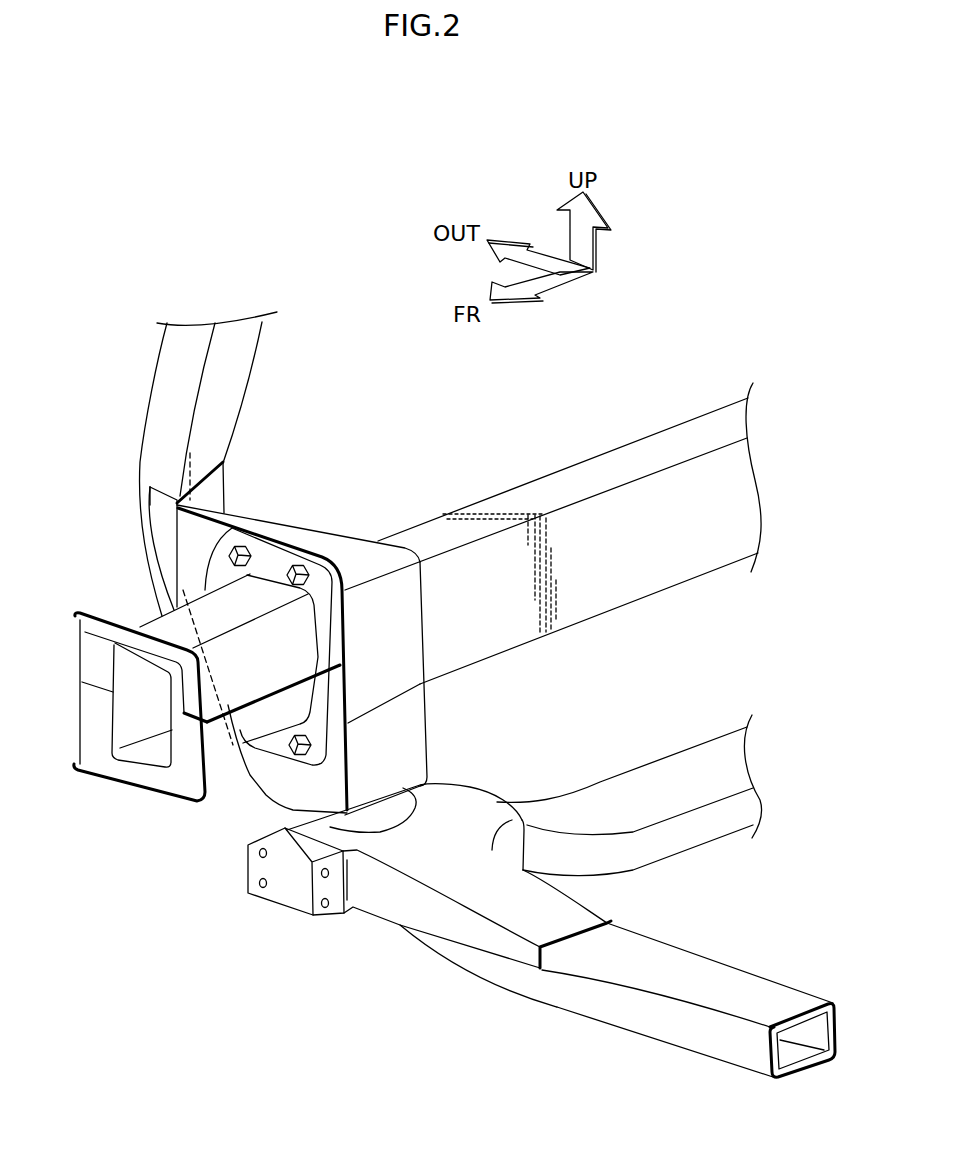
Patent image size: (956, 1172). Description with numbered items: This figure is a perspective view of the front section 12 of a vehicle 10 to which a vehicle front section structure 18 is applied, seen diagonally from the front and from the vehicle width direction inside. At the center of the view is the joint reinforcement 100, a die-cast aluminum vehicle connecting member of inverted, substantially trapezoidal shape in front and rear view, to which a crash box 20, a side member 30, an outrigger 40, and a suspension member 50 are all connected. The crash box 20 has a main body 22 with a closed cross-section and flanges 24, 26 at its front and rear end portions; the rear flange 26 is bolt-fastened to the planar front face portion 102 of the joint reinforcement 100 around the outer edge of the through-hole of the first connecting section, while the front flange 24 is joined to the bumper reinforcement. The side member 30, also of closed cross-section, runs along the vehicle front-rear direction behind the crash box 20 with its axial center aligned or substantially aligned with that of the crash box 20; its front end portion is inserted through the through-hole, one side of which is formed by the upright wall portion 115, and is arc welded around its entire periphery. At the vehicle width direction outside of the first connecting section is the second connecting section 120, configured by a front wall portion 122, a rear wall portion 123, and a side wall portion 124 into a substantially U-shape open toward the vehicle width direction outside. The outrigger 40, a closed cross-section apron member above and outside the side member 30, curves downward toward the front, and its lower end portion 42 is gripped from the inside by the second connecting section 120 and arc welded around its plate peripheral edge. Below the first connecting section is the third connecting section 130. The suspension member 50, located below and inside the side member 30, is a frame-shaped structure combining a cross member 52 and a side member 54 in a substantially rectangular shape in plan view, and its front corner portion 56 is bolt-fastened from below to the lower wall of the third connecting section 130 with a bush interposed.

The vehicle 10 is at (291, 125).
The front section 12 is at (344, 154).
The vehicle front section structure 18 is at (374, 225).
The crash box 20 is at (142, 620).
The main body 22 is at (222, 742).
The flange 24 is at (145, 797).
The flange 26 is at (316, 747).
The side member 30 is at (527, 471).
The outrigger (apron member) 40 is at (251, 387).
The lower end portion 42 is at (147, 545).
The suspension member 50 is at (614, 762).
The cross member 52 is at (702, 1042).
The side member 54 is at (710, 832).
The corner portion 56 is at (440, 870).
The joint reinforcement 100 is at (347, 508).
The front face portion 102 is at (290, 787).
The upright wall portion 115 is at (410, 630).
The second connecting section 120 is at (237, 478).
The front wall portion 122 is at (163, 507).
The rear wall portion 123 is at (190, 453).
The side wall portion 124 is at (212, 497).
The third connecting section 130 is at (412, 731).